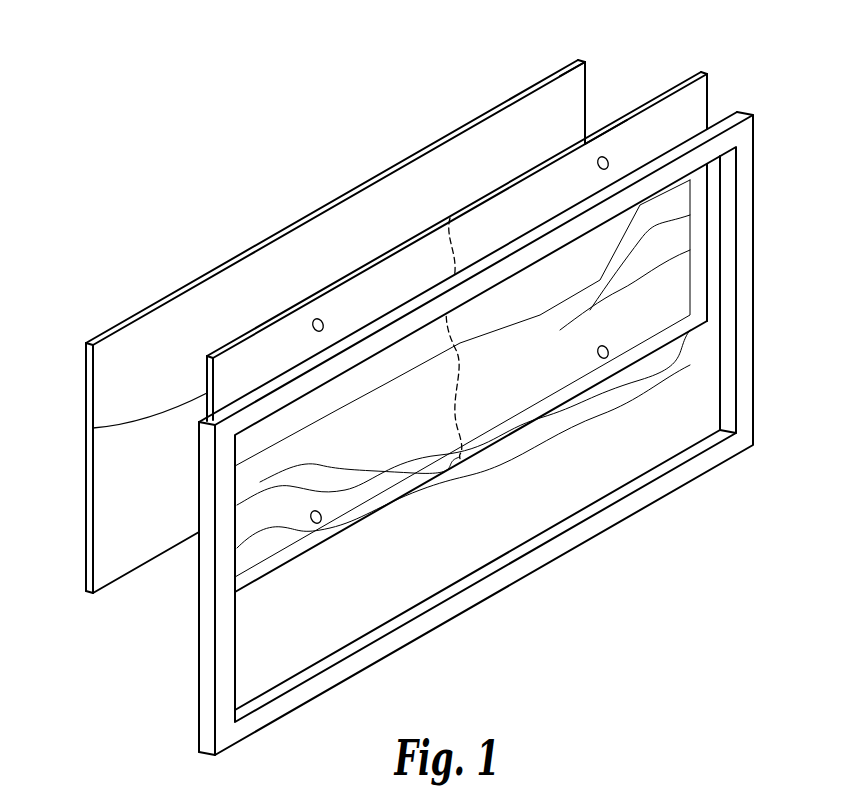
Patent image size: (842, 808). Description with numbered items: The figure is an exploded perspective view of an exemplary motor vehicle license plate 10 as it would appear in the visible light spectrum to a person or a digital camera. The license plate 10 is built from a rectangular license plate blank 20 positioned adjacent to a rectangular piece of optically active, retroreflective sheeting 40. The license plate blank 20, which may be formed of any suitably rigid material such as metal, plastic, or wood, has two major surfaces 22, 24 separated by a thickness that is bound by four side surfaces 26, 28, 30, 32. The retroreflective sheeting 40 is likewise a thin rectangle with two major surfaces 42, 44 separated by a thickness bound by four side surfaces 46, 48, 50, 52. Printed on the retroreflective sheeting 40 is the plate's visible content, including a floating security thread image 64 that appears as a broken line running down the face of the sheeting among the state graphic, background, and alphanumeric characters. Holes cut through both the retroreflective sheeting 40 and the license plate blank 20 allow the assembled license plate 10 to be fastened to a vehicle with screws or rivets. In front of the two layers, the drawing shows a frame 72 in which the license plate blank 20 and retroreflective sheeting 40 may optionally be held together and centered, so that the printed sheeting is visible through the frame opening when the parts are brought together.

The license plate 10 is at (230, 88).
The license plate blank 20 is at (398, 140).
The major surface 22 is at (556, 85).
The major surface 24 is at (318, 210).
The side surface 26 is at (260, 240).
The side surface 28 is at (585, 74).
The side surface 30 is at (153, 560).
The side surface 32 is at (88, 528).
The retroreflective sheeting 40 is at (670, 68).
The major surface 42 is at (690, 95).
The major surface 44 is at (606, 130).
The side surface 46 is at (649, 106).
The side surface 48 is at (706, 82).
The side surface 50 is at (548, 416).
The side surface 52 is at (93, 428).
The floating security thread image 64 is at (462, 462).
The frame 72 is at (518, 571).